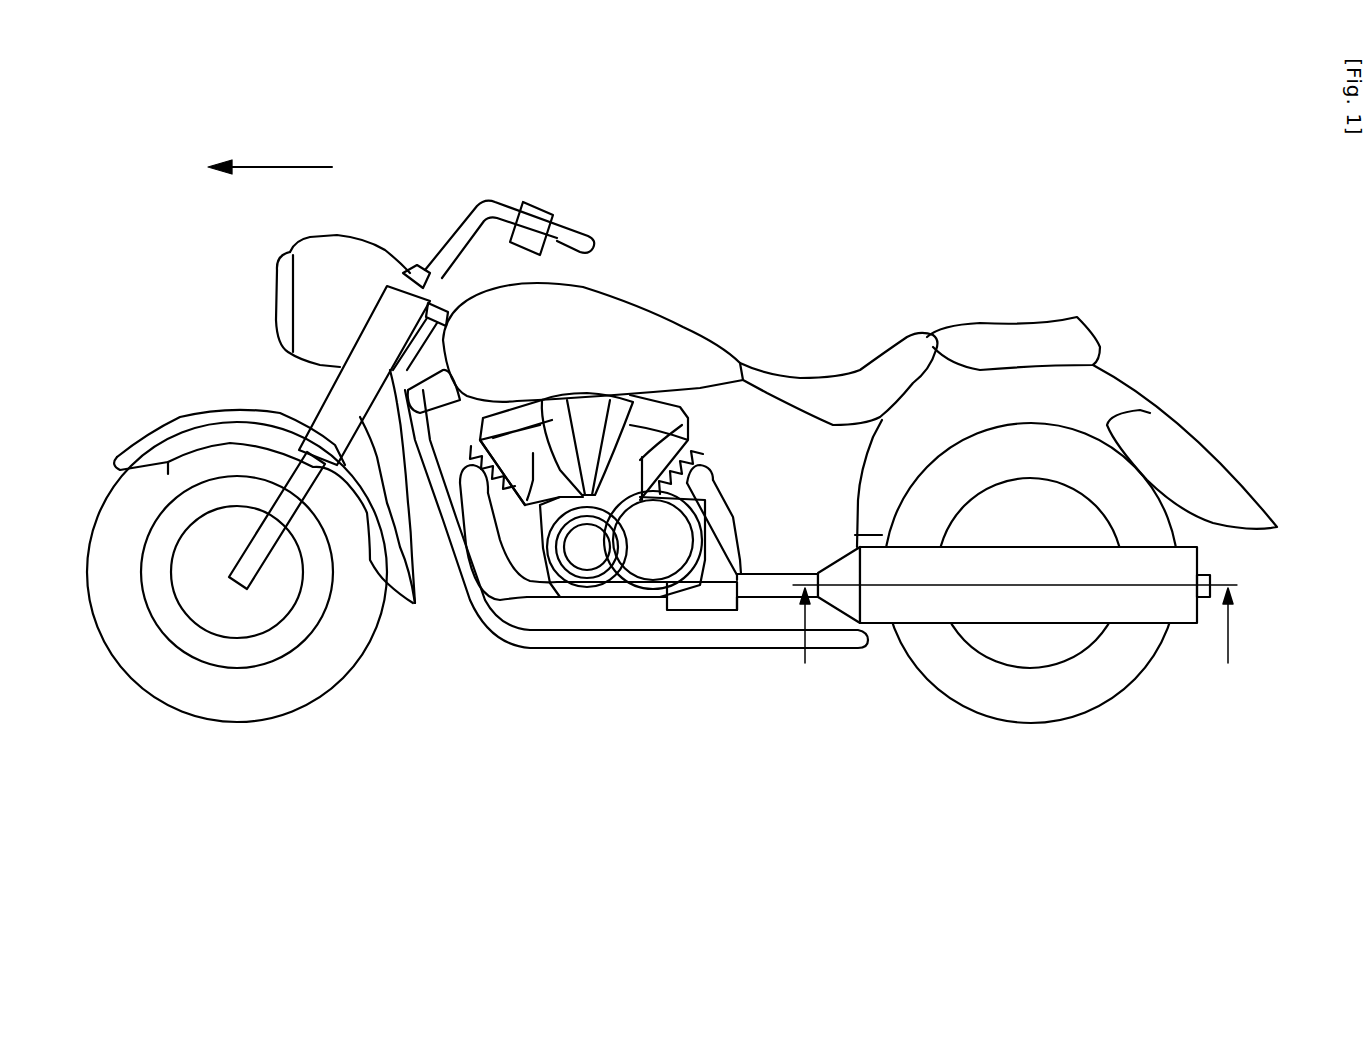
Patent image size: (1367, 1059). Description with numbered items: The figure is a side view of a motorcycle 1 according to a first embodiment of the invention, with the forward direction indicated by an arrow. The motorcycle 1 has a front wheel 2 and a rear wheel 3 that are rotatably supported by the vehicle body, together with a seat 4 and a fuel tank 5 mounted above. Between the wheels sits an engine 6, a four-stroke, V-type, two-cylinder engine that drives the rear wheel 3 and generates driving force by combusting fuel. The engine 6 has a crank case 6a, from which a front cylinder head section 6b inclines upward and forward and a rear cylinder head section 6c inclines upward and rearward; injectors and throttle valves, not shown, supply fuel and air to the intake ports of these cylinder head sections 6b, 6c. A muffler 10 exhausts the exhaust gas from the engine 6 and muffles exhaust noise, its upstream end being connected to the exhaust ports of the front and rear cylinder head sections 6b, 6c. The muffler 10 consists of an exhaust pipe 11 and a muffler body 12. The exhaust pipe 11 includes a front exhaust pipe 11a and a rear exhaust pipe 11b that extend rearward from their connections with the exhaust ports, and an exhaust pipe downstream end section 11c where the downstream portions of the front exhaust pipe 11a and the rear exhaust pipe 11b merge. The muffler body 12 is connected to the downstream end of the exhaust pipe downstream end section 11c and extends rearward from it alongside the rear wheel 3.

The motorcycle 1 is at (722, 183).
The front wheel 2 is at (167, 458).
The rear wheel 3 is at (1103, 473).
The seat 4 is at (858, 397).
The fuel tank 5 is at (600, 350).
The engine 6 is at (570, 748).
The crank case 6a is at (593, 600).
The front cylinder head section 6b is at (540, 495).
The rear cylinder head section 6c is at (587, 550).
The muffler 10 is at (673, 805).
The exhaust pipe 11 is at (587, 743).
The front exhaust pipe 11a is at (622, 590).
The rear exhaust pipe 11b is at (730, 590).
The exhaust pipe downstream end section 11c is at (793, 613).
The muffler body 12 is at (922, 605).